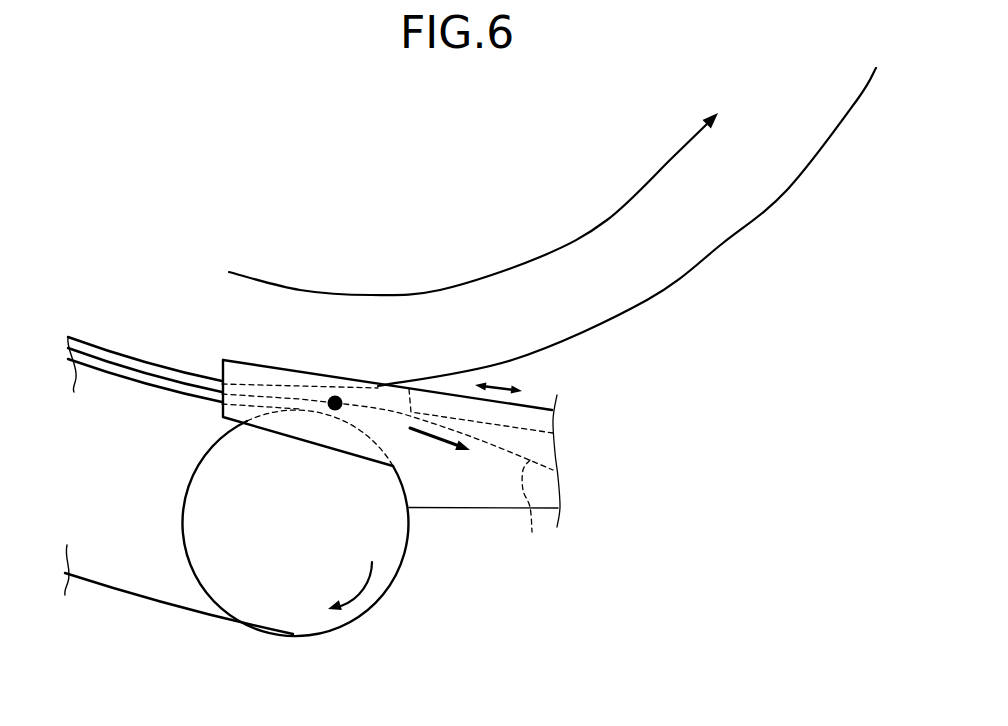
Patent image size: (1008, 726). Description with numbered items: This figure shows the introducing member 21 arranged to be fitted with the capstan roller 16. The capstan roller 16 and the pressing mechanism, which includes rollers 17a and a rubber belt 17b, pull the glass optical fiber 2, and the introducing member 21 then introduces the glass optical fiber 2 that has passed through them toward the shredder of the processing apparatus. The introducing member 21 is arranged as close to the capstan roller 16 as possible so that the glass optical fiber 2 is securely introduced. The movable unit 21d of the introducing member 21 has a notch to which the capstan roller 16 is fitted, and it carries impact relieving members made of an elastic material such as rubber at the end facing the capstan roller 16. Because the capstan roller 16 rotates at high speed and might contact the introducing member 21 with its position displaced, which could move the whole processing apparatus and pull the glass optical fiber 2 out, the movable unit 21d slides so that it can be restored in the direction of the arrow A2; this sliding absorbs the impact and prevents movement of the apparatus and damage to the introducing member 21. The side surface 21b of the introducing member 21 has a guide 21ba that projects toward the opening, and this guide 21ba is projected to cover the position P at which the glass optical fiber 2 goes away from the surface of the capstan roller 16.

The capstan roller 16 is at (785, 191).
The glass optical fiber 2 is at (310, 448).
The introducing member 21 is at (450, 445).
The guide 21ba is at (287, 372).
The side surface 21b is at (472, 498).
The movable unit 21d is at (537, 415).
The position at which the glass optical fiber goes away from the capstan roller surf P is at (336, 397).
The arrow A2 is at (505, 387).
The rollers 17a is at (298, 623).
The rubber belt 17b is at (125, 598).